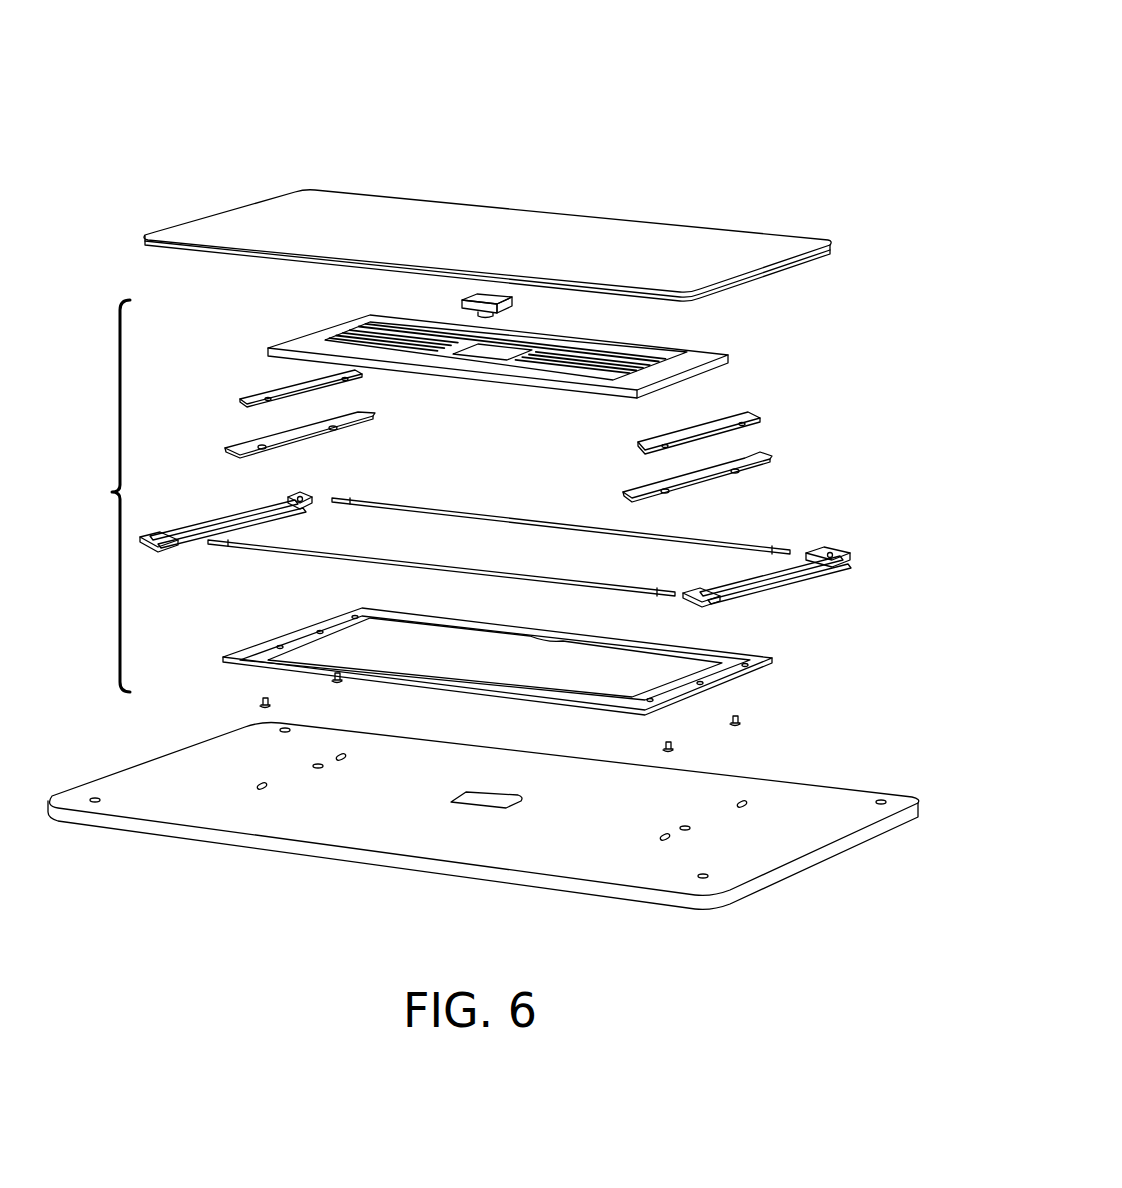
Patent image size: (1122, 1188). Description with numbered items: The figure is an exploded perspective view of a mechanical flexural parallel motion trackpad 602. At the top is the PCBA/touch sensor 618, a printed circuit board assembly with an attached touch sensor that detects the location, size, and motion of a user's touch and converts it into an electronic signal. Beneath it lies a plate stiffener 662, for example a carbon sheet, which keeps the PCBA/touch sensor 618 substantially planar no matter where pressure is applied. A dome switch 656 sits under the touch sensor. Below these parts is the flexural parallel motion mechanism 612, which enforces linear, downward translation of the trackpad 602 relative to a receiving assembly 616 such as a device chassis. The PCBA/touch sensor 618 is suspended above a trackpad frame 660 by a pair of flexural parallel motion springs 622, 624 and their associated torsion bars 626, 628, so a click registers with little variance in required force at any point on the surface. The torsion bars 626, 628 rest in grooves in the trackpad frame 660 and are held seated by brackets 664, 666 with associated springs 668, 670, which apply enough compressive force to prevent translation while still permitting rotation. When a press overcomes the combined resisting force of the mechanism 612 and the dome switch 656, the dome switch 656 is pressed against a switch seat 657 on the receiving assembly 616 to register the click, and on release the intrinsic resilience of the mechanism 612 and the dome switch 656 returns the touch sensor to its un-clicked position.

The mechanical flexural parallel motion trackpad 602 is at (699, 94).
The PCBA/touch sensor 618 is at (396, 244).
The dome switch 656 is at (490, 297).
The plate stiffener 662 is at (727, 352).
The bracket 666 is at (265, 395).
The spring 670 is at (242, 445).
The bracket 664 is at (757, 408).
The spring 668 is at (762, 452).
The torsion bar 628 is at (395, 505).
The torsion bar 626 is at (296, 550).
The flexural parallel motion spring 624 is at (225, 525).
The flexural parallel motion spring 622 is at (818, 552).
The trackpad frame 660 is at (780, 650).
The receiving assembly 616 is at (393, 816).
The switch seat 657 is at (508, 815).
The flexural parallel motion mechanism 612 is at (101, 505).